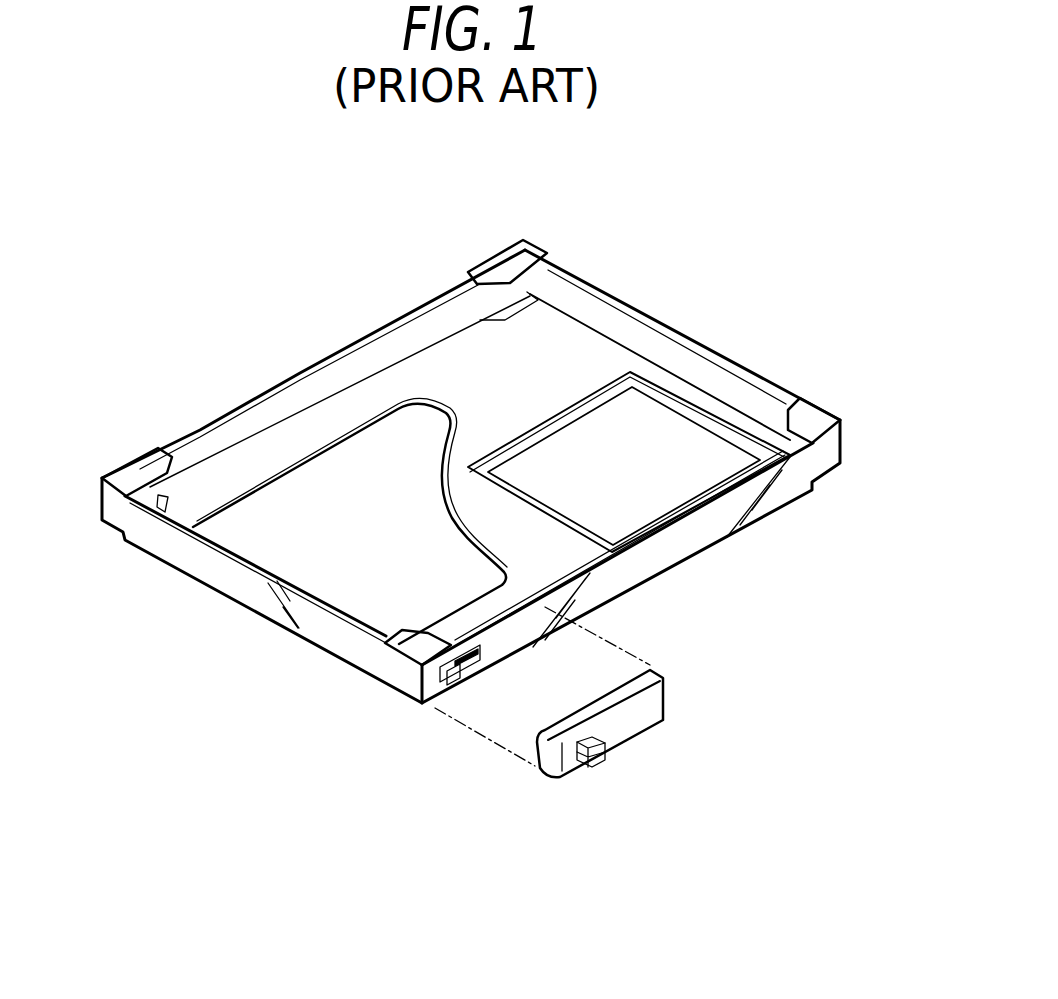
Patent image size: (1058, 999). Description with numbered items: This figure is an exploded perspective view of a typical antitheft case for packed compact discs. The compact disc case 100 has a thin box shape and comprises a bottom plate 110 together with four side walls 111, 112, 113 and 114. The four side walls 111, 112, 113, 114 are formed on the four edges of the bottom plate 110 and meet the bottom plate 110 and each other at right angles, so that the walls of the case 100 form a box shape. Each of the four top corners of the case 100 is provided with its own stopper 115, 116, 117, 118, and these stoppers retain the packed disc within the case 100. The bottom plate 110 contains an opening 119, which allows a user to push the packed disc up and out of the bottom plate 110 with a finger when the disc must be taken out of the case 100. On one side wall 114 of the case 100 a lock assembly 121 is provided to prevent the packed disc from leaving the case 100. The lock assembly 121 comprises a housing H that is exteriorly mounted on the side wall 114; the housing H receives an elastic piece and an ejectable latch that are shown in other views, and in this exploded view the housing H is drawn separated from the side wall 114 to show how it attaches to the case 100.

The compact disc case 100 is at (763, 279).
The bottom plate 110 is at (436, 368).
The side wall 111 is at (652, 328).
The side wall 112 is at (227, 555).
The side wall 113 is at (253, 397).
The side wall 114 is at (680, 550).
The stopper 115 is at (505, 265).
The stopper 116 is at (137, 473).
The stopper 117 is at (817, 423).
The stopper 118 is at (412, 645).
The opening 119 is at (357, 548).
The lock assembly 121 is at (580, 785).
The housing H is at (633, 723).